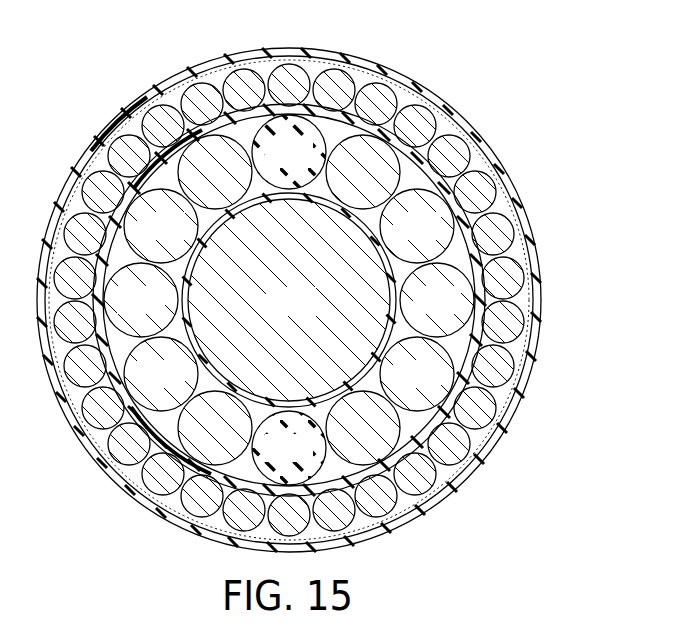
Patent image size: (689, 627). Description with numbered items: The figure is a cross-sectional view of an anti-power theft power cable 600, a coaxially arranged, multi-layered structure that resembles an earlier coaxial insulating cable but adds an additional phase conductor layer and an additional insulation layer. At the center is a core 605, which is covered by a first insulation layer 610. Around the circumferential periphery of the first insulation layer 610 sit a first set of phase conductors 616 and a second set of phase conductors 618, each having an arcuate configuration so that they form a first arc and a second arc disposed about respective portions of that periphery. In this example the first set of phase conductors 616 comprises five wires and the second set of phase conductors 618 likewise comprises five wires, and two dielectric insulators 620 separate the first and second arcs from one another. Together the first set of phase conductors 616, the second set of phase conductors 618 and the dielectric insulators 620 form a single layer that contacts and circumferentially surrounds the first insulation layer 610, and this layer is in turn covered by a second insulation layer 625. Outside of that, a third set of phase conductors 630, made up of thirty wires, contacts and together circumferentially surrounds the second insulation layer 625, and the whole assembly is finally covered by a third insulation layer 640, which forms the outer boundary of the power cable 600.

The power cable 600 is at (82, 76).
The core 605 is at (311, 314).
The first insulation layer 610 is at (207, 495).
The first set of phase conductors 616 is at (181, 240).
The second set of phase conductors 618 is at (437, 240).
The dielectric insulators 620 is at (309, 166).
The second insulation layer 625 is at (208, 128).
The third set of phase conductors 630 is at (430, 96).
The third insulation layer 640 is at (360, 62).